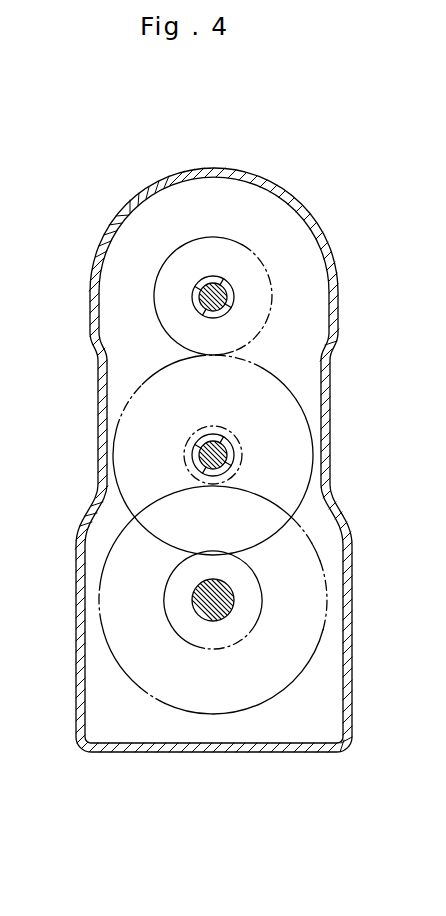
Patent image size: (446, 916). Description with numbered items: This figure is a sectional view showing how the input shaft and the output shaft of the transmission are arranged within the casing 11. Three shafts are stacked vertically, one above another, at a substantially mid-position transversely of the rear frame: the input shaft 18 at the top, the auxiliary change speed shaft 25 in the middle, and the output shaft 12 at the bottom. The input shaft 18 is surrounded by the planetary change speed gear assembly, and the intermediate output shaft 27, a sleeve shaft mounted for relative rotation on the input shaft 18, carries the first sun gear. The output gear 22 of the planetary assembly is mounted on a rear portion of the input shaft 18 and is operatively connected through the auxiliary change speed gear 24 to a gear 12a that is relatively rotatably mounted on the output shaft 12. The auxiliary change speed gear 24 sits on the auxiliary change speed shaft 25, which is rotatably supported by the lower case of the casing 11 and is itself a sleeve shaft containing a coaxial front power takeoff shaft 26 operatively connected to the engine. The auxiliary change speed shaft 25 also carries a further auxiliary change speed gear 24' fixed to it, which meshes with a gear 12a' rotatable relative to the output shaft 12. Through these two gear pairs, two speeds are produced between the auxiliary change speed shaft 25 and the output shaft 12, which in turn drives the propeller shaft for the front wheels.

The casing 11 is at (97, 250).
The output gear 22 is at (214, 237).
The intermediate output shaft 27 is at (193, 288).
The input shaft 18 is at (234, 294).
The auxiliary change speed gear 24 is at (213, 439).
The further auxiliary change speed gear 24' is at (240, 458).
The auxiliary change speed shaft 25 is at (213, 434).
The front power takeoff shaft 26 is at (195, 447).
The output shaft 12 is at (212, 621).
The gear 12a is at (282, 600).
The gear 12a' is at (213, 644).